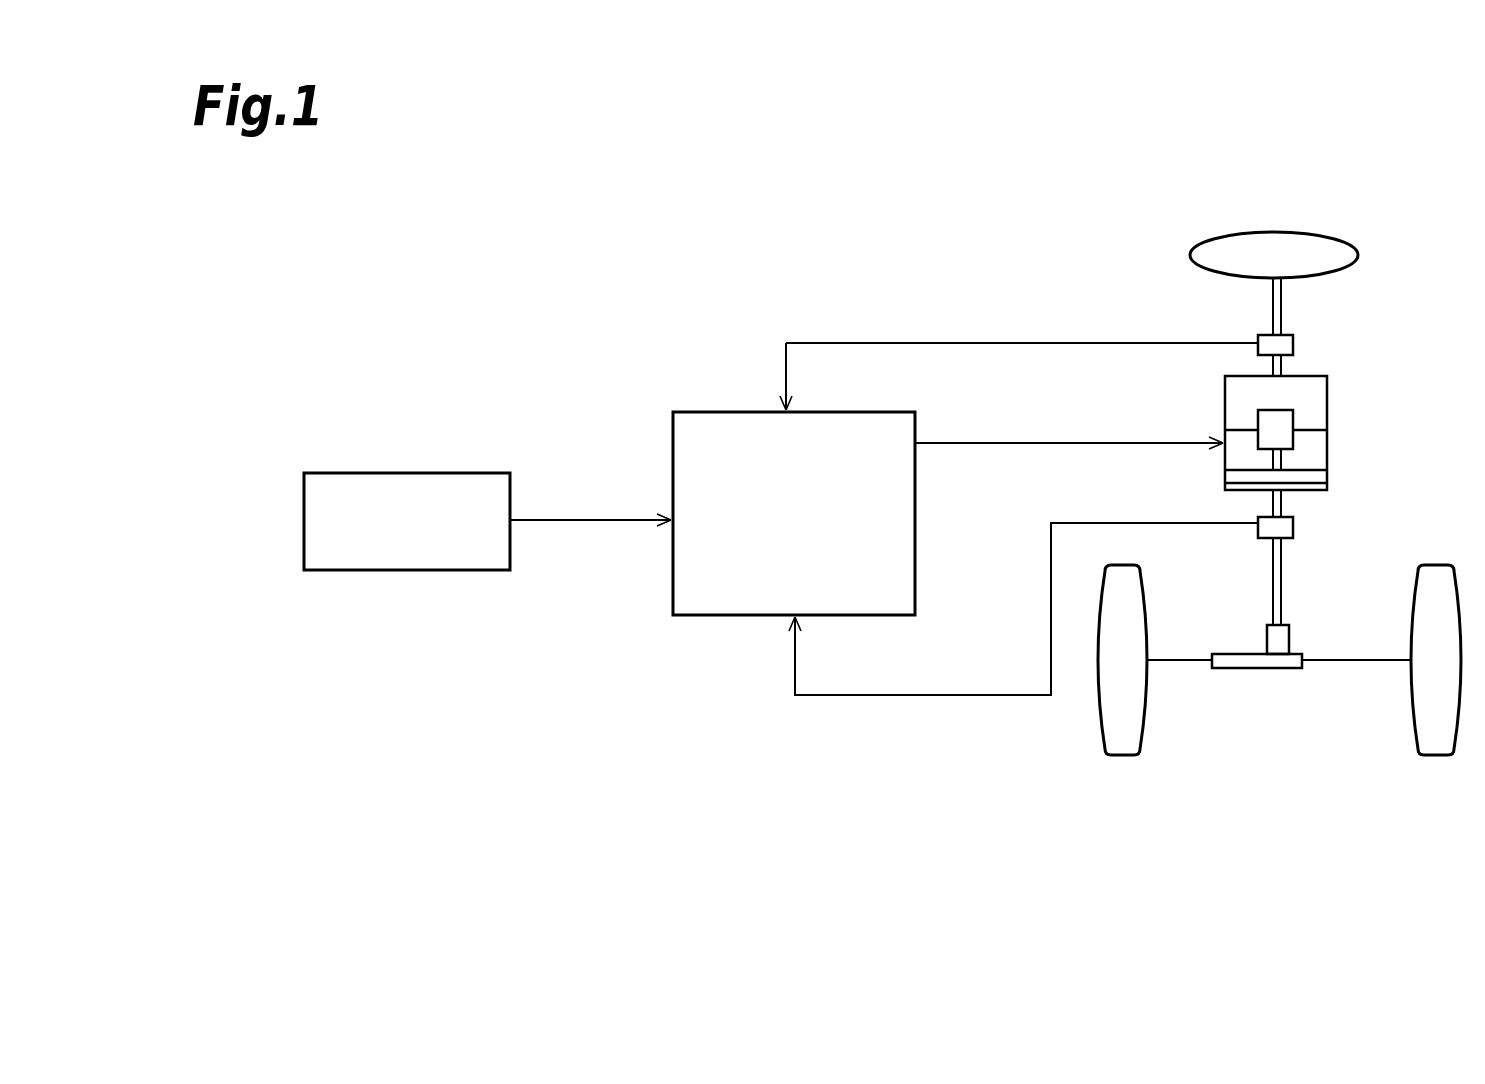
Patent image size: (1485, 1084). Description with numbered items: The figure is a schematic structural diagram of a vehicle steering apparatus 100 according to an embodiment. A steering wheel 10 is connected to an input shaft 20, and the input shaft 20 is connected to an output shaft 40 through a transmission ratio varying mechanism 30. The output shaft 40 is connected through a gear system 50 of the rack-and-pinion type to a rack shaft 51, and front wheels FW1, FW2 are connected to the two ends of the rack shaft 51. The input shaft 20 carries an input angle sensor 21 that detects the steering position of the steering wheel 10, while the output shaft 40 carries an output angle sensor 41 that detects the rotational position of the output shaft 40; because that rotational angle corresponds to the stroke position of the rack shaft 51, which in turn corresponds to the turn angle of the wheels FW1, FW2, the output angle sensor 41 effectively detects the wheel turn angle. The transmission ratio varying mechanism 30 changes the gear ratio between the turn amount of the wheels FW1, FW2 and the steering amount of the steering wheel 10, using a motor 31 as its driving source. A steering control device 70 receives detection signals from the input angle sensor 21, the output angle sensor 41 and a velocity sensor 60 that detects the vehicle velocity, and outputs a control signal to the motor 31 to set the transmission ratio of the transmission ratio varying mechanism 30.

The steering apparatus 100 is at (892, 787).
The steering wheel 10 is at (1330, 230).
The input shaft 20 is at (1282, 302).
The input angle sensor 21 is at (1294, 347).
The transmission ratio varying mechanism 30 is at (1328, 405).
The motor 31 is at (1258, 410).
The output shaft 40 is at (1282, 583).
The output angle sensor 41 is at (1294, 525).
The gear system 50 is at (1246, 669).
The rack shaft 51 is at (1345, 661).
The velocity sensor 60 is at (409, 471).
The steering control device 70 is at (916, 585).
The front wheel FW1 is at (1117, 756).
The front wheel FW2 is at (1437, 756).